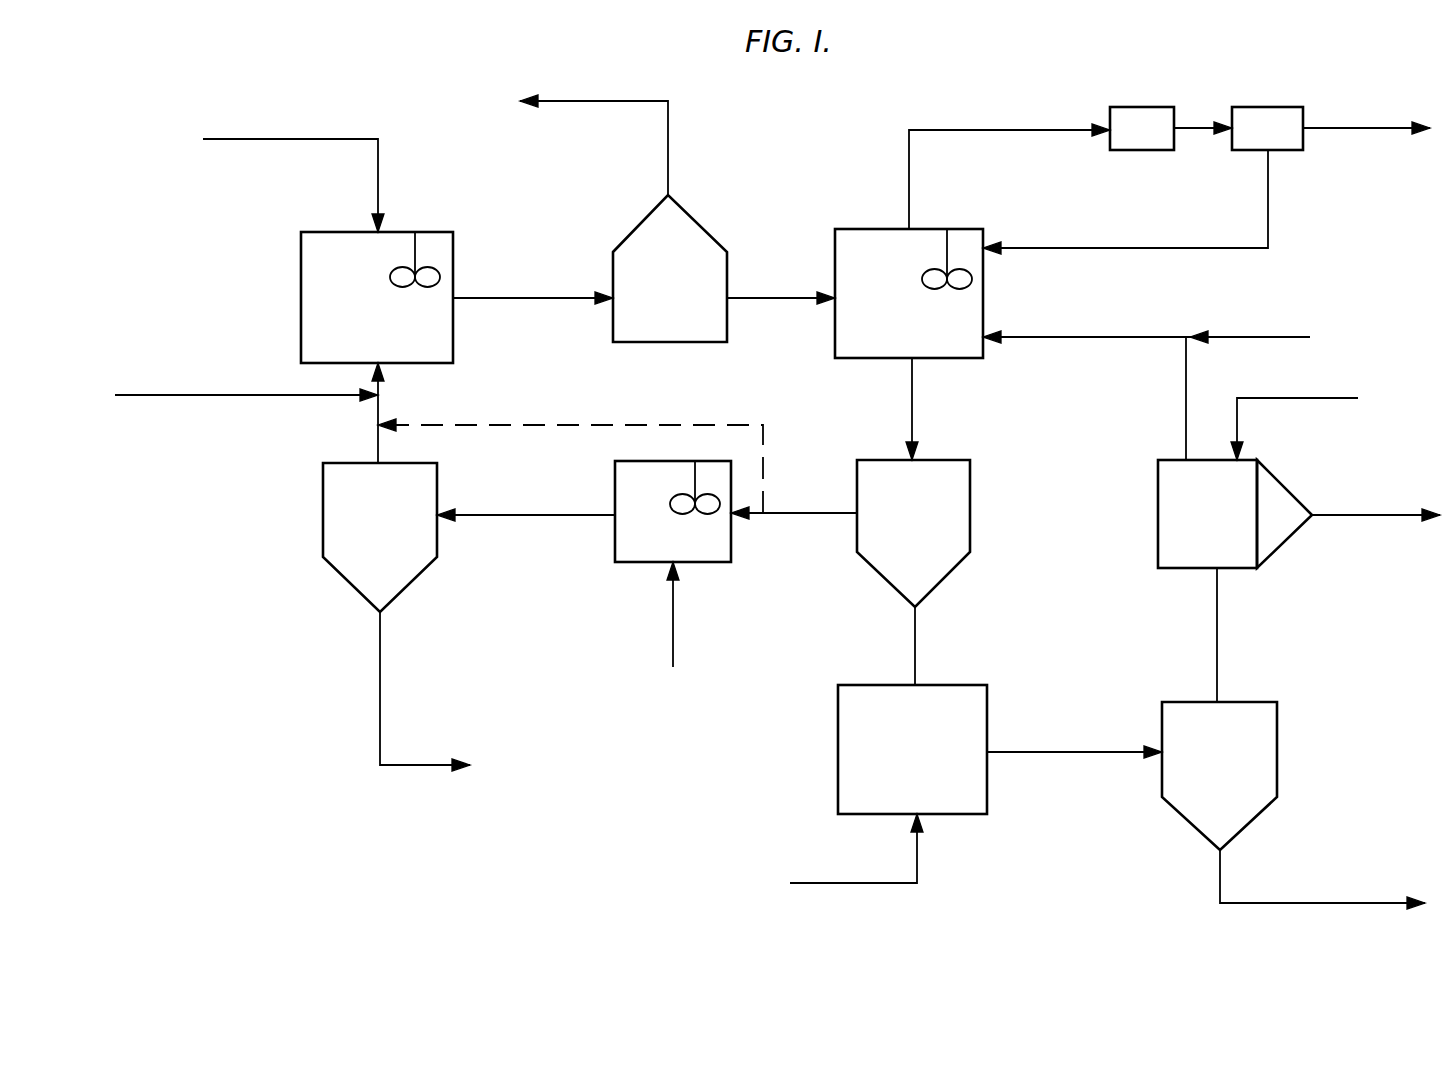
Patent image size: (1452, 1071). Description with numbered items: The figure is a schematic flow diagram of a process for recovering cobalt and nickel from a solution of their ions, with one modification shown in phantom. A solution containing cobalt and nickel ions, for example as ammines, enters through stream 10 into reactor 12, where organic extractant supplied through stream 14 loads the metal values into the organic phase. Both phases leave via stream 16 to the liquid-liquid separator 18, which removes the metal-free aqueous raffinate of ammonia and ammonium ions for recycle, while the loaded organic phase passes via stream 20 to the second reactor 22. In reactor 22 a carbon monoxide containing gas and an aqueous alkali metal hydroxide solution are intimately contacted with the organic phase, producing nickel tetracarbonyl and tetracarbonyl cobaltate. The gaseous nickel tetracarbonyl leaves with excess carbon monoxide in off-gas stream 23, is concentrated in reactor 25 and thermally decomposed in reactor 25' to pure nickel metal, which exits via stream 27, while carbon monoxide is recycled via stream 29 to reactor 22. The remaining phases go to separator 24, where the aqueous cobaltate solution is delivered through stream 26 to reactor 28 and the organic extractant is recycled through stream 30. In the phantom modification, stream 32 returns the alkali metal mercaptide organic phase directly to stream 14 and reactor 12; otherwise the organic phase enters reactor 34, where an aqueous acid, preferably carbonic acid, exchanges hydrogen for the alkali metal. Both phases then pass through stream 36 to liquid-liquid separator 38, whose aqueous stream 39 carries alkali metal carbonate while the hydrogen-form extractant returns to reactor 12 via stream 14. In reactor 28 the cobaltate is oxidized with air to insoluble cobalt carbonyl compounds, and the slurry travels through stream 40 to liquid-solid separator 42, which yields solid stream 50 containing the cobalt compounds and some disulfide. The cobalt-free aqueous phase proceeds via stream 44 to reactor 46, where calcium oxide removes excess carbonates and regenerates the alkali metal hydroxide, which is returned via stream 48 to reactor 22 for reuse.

The stream 10 is at (378, 165).
The reactor 12 is at (356, 322).
The stream 14 is at (378, 408).
The stream 16 is at (580, 298).
The liquid-liquid separator 18 is at (651, 323).
The stream 20 is at (757, 299).
The second reactor 22 is at (894, 324).
The carbon monoxide off-gas stream 23 is at (909, 205).
The separator 24 is at (894, 533).
The reactor 25 is at (1171, 128).
The reactor 25' is at (1267, 128).
The stream 26 is at (915, 615).
The stream 27 is at (1378, 128).
The reactor 28 is at (894, 766).
The stream 29 is at (1268, 185).
The stream 30 is at (810, 513).
The stream 32 is at (685, 425).
The reactor 34 is at (637, 541).
The stream 36 is at (473, 515).
The liquid-liquid separator 38 is at (362, 533).
The aqueous stream 39 is at (380, 676).
The stream 40 is at (998, 752).
The liquid-solid separator 42 is at (1202, 773).
The stream 44 is at (1217, 587).
The reactor 46 is at (1189, 533).
The stream 48 is at (1075, 337).
The solid stream 50 is at (1220, 875).